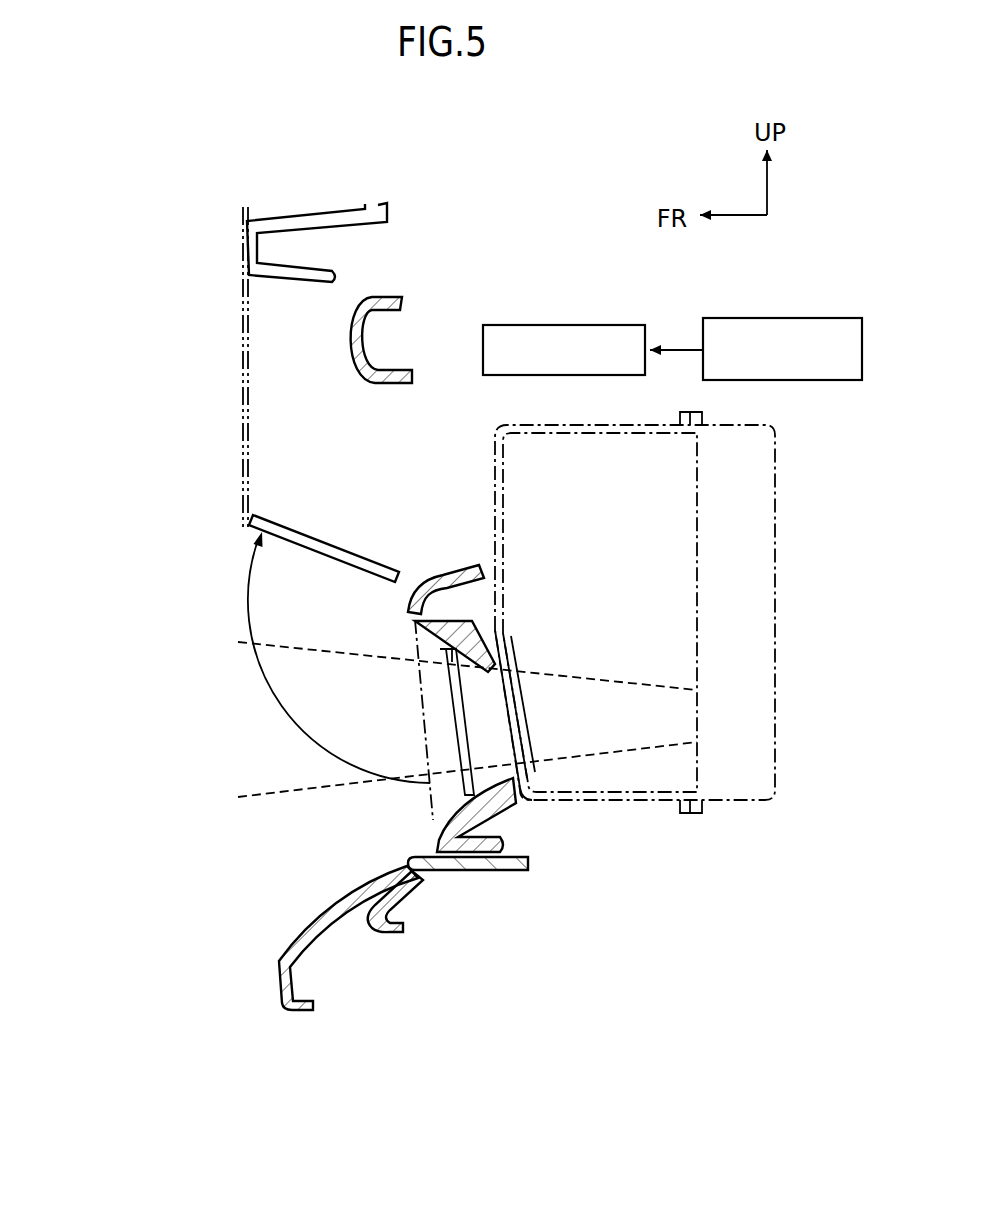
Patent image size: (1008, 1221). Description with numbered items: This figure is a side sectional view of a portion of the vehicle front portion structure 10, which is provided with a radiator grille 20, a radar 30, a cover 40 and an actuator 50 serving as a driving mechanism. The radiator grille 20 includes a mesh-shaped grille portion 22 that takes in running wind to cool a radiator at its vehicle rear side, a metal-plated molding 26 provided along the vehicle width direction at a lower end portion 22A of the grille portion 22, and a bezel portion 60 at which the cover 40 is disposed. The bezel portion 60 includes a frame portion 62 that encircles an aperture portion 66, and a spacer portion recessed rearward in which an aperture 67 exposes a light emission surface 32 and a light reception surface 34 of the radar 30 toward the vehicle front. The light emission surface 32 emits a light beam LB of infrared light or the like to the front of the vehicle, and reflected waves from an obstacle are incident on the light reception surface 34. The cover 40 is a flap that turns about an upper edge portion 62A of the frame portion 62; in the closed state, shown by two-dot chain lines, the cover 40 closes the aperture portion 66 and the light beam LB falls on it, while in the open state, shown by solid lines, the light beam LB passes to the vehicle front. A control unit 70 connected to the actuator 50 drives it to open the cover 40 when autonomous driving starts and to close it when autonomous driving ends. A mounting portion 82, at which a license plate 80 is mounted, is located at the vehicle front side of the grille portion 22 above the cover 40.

The vehicle front portion structure 10 is at (101, 195).
The radiator grille 20 is at (464, 521).
The grille portion 22 is at (387, 386).
The lower end portion 22A is at (410, 912).
The metal-plated molding 26 is at (276, 967).
The radar 30 is at (778, 470).
The light emission surface 32 is at (585, 709).
The light reception surface 34 is at (520, 705).
The cover 40 is at (316, 530).
The actuator 50 is at (590, 323).
The bezel portion 60 is at (480, 613).
The frame portion 62 is at (438, 817).
The upper edge portion 62A is at (412, 628).
The aperture portion 66 is at (445, 722).
The aperture 67 is at (536, 774).
The control unit 70 is at (814, 317).
The license plate 80 is at (241, 352).
The mounting portion 82 is at (284, 280).
The light beam LB is at (285, 800).